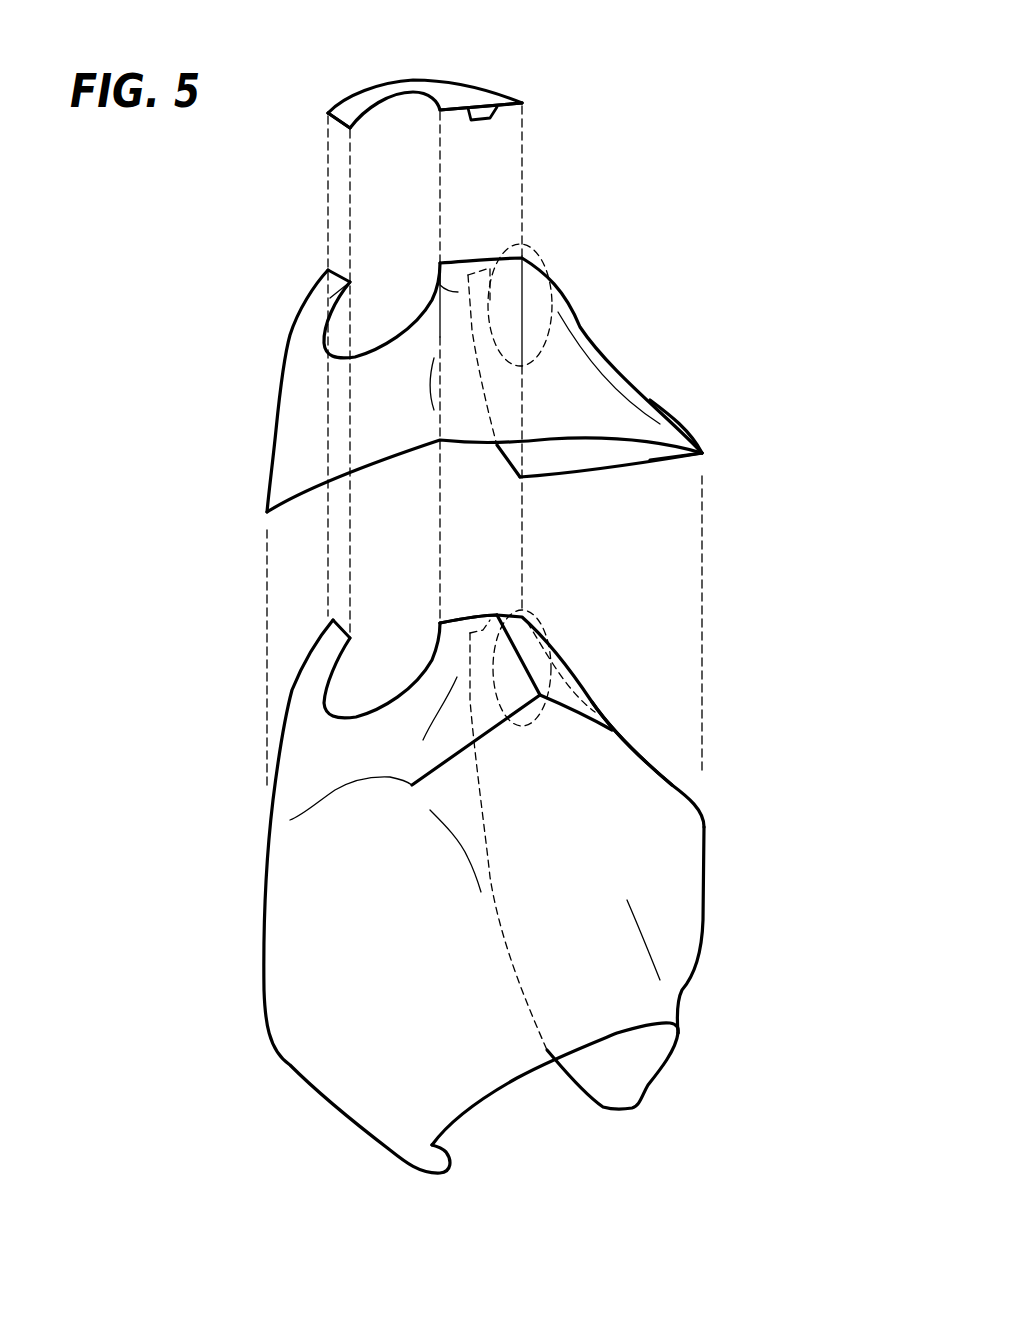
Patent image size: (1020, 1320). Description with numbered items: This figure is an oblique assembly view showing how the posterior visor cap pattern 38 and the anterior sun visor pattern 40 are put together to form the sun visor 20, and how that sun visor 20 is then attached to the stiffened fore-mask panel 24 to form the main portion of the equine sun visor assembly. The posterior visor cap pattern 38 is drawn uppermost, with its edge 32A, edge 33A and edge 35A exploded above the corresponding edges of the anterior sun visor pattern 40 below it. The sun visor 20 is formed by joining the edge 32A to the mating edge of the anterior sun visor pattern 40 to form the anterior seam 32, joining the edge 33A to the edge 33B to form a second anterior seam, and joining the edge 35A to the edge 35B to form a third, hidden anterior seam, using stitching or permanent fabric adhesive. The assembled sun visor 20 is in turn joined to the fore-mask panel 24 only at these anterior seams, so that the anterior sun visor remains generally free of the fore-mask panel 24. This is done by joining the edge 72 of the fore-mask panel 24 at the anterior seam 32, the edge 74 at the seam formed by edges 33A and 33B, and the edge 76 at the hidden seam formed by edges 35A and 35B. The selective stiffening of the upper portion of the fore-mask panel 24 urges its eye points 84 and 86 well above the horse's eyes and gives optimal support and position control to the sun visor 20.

The sun visor 20 is at (687, 244).
The fore-mask panel 24 is at (745, 826).
The anterior seam 32 is at (440, 288).
The edge 32A is at (520, 110).
The edge 33A is at (336, 126).
The edge 33B is at (322, 290).
The edge 35A is at (484, 122).
The edge 35B is at (540, 244).
The posterior visor cap pattern 38 is at (506, 92).
The anterior sun visor pattern 40 is at (703, 432).
The edge 72 is at (461, 621).
The edge 74 is at (334, 621).
The edge 76 is at (486, 632).
The eye point 84 is at (290, 820).
The eye point 86 is at (643, 748).